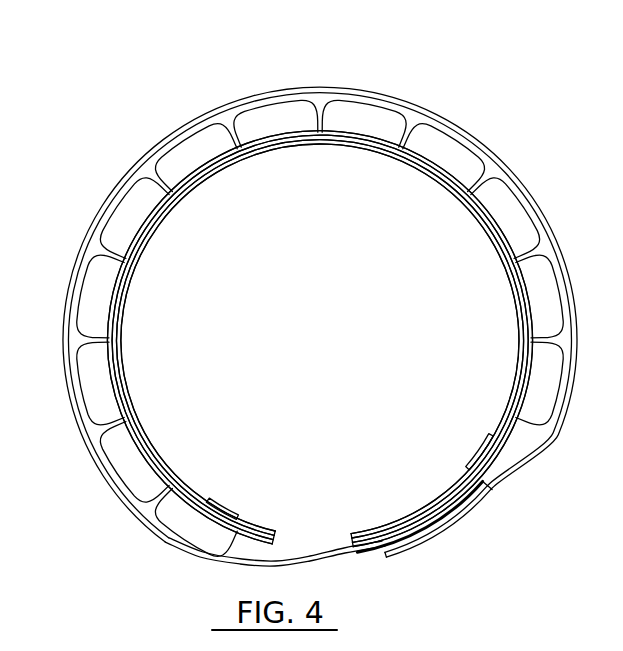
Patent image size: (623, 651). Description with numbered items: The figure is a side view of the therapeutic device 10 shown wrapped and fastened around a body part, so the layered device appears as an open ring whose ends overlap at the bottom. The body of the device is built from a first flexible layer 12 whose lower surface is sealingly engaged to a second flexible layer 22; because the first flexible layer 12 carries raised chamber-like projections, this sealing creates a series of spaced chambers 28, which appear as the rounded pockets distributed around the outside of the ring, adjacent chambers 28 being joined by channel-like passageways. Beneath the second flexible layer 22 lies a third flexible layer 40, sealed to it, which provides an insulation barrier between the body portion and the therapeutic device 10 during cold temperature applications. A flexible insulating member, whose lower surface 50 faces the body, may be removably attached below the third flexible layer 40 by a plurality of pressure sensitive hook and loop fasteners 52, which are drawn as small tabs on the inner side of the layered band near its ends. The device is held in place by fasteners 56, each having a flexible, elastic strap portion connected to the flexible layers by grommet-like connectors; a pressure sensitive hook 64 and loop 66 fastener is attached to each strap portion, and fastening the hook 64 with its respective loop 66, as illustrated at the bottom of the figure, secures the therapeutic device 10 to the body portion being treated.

The therapeutic device 10 is at (460, 62).
The first flexible layer 12 is at (158, 477).
The second flexible layer 22 is at (130, 433).
The chambers 28 is at (277, 108).
The third flexible layer 40 is at (122, 372).
The lower surface 50 is at (3, 62).
The hook and loop fasteners 52 is at (220, 507).
The fasteners 56 is at (530, 462).
The hook 64 is at (415, 543).
The loop 66 is at (450, 496).